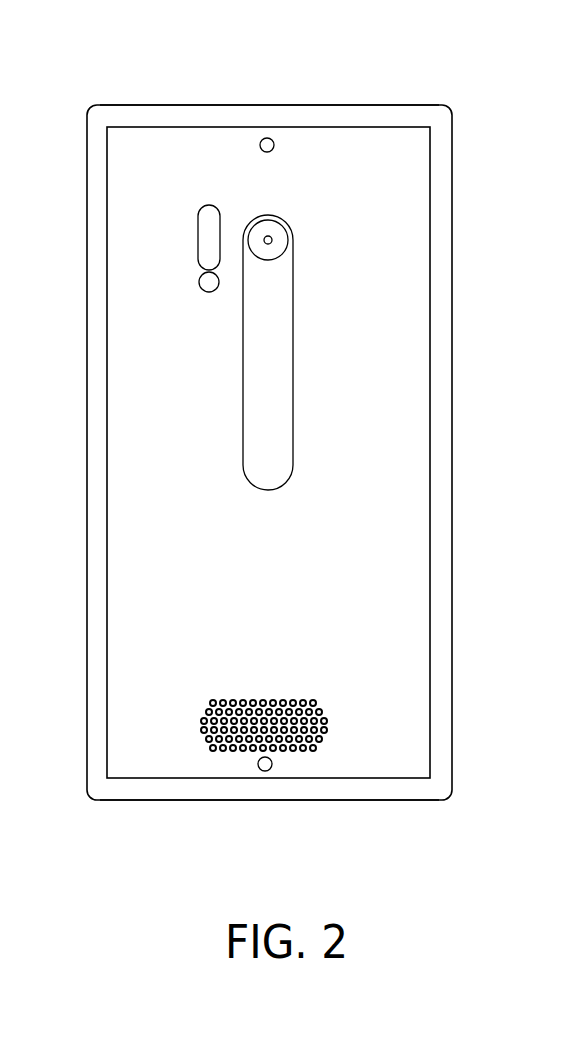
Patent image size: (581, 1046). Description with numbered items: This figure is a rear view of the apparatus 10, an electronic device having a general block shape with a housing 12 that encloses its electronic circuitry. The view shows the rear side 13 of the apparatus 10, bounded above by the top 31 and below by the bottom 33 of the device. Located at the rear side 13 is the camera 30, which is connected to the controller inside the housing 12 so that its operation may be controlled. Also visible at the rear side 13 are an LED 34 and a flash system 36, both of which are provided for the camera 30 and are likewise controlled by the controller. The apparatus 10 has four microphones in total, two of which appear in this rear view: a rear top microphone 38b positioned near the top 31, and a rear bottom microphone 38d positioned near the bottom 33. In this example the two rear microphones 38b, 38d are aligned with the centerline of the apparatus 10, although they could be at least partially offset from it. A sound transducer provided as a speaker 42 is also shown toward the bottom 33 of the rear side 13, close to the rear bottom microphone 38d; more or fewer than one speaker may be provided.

The apparatus 10 is at (498, 170).
The housing 12 is at (440, 347).
The rear side 13 is at (407, 435).
The camera 30 is at (278, 238).
The top 31 is at (187, 104).
The bottom 33 is at (342, 800).
The LED 34 is at (199, 283).
The flash system 36 is at (210, 253).
The rear top microphone 38b is at (267, 138).
The rear bottom microphone 38d is at (263, 770).
The speaker 42 is at (330, 723).